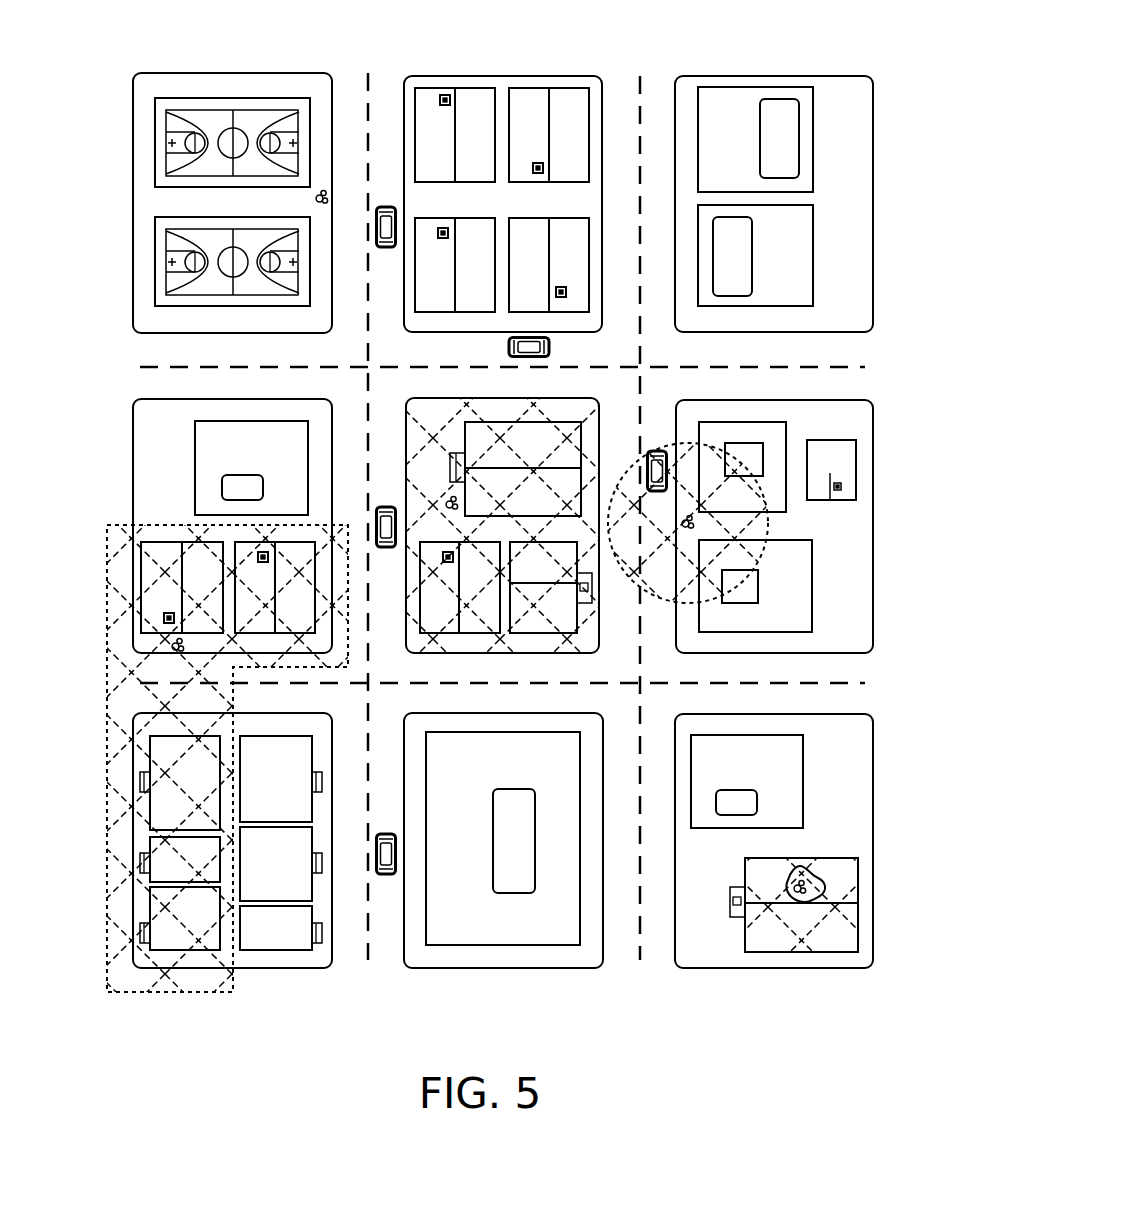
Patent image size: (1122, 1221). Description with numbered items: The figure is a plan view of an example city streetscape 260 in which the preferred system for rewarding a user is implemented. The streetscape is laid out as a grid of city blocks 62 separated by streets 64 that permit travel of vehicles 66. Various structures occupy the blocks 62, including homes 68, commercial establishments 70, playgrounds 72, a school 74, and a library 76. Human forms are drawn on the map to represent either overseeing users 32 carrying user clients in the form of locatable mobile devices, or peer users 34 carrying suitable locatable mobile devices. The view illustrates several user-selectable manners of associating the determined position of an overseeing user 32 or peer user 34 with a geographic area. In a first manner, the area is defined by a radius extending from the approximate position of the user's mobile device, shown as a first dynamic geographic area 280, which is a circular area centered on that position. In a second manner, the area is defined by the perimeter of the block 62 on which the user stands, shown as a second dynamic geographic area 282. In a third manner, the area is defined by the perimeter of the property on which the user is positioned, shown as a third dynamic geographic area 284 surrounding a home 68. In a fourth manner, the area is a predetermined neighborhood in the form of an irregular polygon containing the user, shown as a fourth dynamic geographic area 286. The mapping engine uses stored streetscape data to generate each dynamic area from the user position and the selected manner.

The map view of venue 260 is at (647, 68).
The city block 62 is at (219, 213).
The street 64 is at (746, 361).
The vehicle 66 is at (548, 355).
The home 68 is at (461, 146).
The commercial establishment 70 is at (771, 283).
The playground 72 is at (207, 232).
The school 74 is at (463, 923).
The library 76 is at (766, 593).
The overseeing user 32 is at (556, 546).
The peer user 34 is at (182, 652).
The first dynamic geographic area 280 is at (647, 592).
The second dynamic geographic area 282 is at (407, 400).
The third dynamic geographic area 284 is at (832, 938).
The fourth dynamic geographic area 286 is at (190, 992).